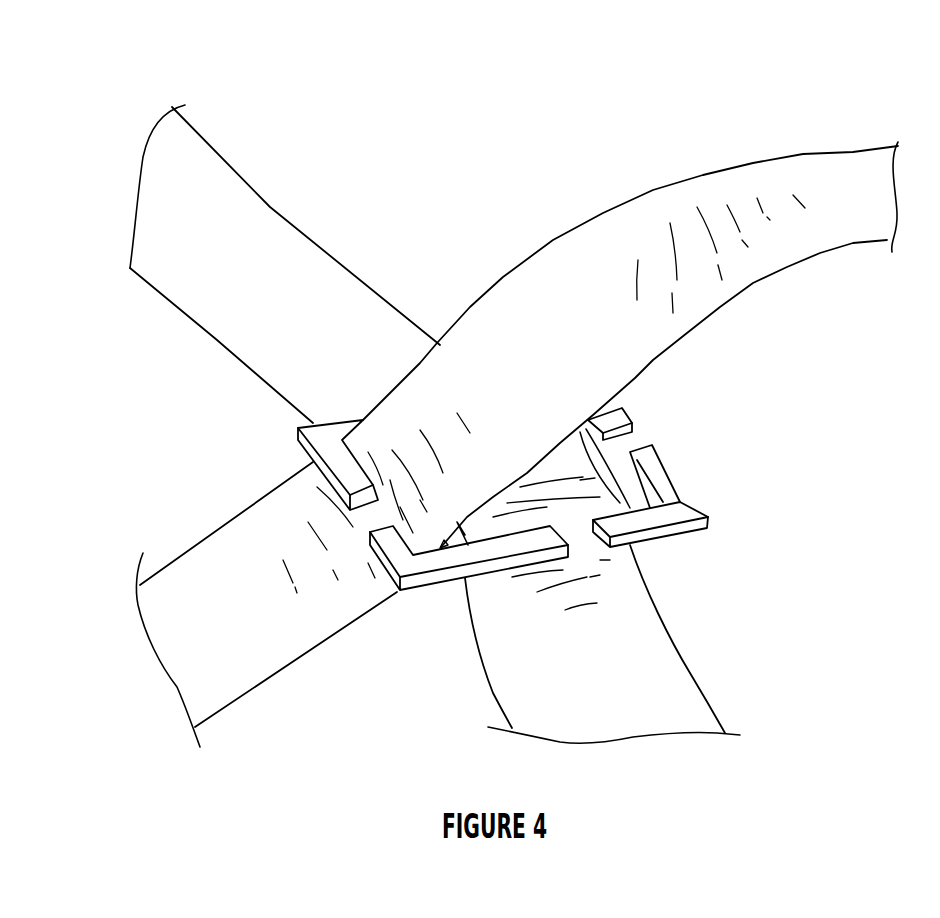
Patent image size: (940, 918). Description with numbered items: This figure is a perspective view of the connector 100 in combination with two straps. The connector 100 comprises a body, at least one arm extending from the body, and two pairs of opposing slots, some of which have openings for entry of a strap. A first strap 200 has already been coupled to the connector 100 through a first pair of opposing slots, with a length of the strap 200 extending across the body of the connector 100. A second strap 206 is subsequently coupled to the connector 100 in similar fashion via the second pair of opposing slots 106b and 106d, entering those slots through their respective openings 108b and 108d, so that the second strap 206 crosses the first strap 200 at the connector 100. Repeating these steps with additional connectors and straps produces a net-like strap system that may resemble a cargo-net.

The connector 100 is at (672, 587).
The strap 200 is at (248, 238).
The second strap 206 is at (805, 168).
The opening 108b is at (367, 523).
The slot 106b is at (427, 558).
The opening 108d is at (641, 438).
The slot 106d is at (653, 497).